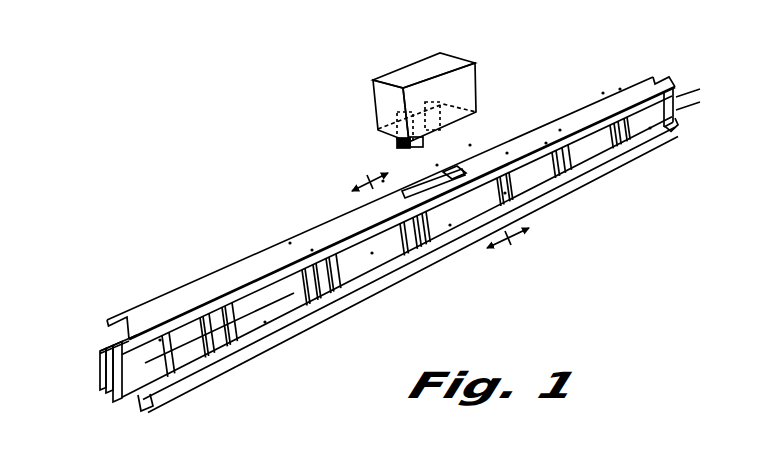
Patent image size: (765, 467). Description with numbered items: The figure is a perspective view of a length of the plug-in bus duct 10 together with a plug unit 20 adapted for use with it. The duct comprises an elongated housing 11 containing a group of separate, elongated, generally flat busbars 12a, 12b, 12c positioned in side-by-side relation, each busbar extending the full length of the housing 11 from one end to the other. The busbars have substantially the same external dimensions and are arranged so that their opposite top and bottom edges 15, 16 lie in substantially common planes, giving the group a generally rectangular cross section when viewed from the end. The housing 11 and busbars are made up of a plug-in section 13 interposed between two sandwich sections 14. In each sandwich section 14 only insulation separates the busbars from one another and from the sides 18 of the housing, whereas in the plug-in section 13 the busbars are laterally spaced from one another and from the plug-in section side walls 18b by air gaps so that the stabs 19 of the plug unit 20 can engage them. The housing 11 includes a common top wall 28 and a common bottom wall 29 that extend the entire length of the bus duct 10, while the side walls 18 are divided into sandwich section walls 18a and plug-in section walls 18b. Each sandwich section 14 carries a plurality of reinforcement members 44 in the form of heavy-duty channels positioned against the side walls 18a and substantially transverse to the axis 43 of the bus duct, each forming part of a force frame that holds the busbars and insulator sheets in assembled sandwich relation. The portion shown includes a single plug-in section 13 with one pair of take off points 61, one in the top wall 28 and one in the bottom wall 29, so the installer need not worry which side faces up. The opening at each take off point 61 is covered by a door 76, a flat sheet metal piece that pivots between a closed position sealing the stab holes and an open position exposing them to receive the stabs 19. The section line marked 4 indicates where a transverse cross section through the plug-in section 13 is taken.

The plug-in bus duct 10 is at (636, 174).
The housing 11 is at (263, 327).
The busbar 12a is at (98, 376).
The busbar 12b is at (104, 385).
The busbar 12c is at (114, 400).
The plug-in section 13 is at (443, 234).
The sandwich section 14 is at (362, 283).
The top edge 15 is at (108, 347).
The bottom edge 16 is at (144, 396).
The side wall 18 is at (647, 136).
The sandwich section side wall 18a is at (383, 270).
The plug-in section side wall 18b is at (459, 233).
The stab 19 is at (399, 150).
The plug unit 20 is at (451, 57).
The top wall 28 is at (250, 268).
The bottom wall 29 is at (236, 378).
The axis 43 is at (296, 295).
The reinforcement member 44 is at (203, 360).
The take off point 61 is at (448, 163).
The door 76 is at (421, 190).
The section line 4- 4 is at (428, 211).